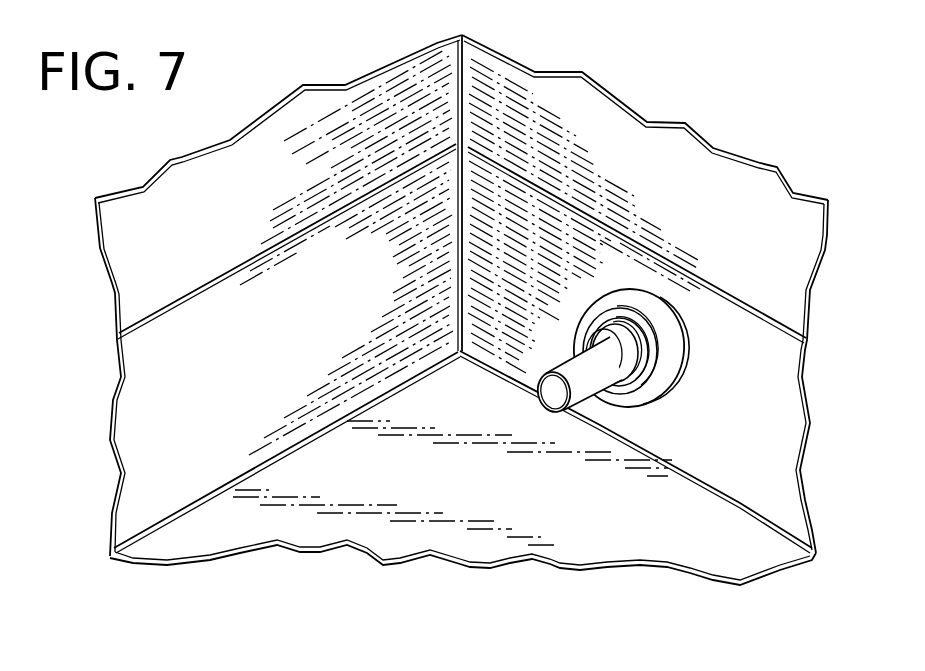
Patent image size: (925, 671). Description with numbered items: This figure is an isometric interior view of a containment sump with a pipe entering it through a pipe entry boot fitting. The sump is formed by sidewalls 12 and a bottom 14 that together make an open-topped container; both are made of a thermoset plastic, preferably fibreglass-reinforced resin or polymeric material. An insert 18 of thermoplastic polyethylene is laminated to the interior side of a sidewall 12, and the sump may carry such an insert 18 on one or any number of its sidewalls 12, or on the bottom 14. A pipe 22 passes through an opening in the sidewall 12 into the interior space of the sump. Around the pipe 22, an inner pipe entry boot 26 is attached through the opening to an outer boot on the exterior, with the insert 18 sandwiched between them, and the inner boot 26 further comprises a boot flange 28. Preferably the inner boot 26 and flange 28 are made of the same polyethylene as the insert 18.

The sidewall 12 is at (335, 100).
The bottom 14 is at (660, 546).
The insert 18 is at (282, 253).
The pipe 22 is at (580, 385).
The inner pipe entry boot 26 is at (598, 333).
The boot flange 28 is at (670, 377).